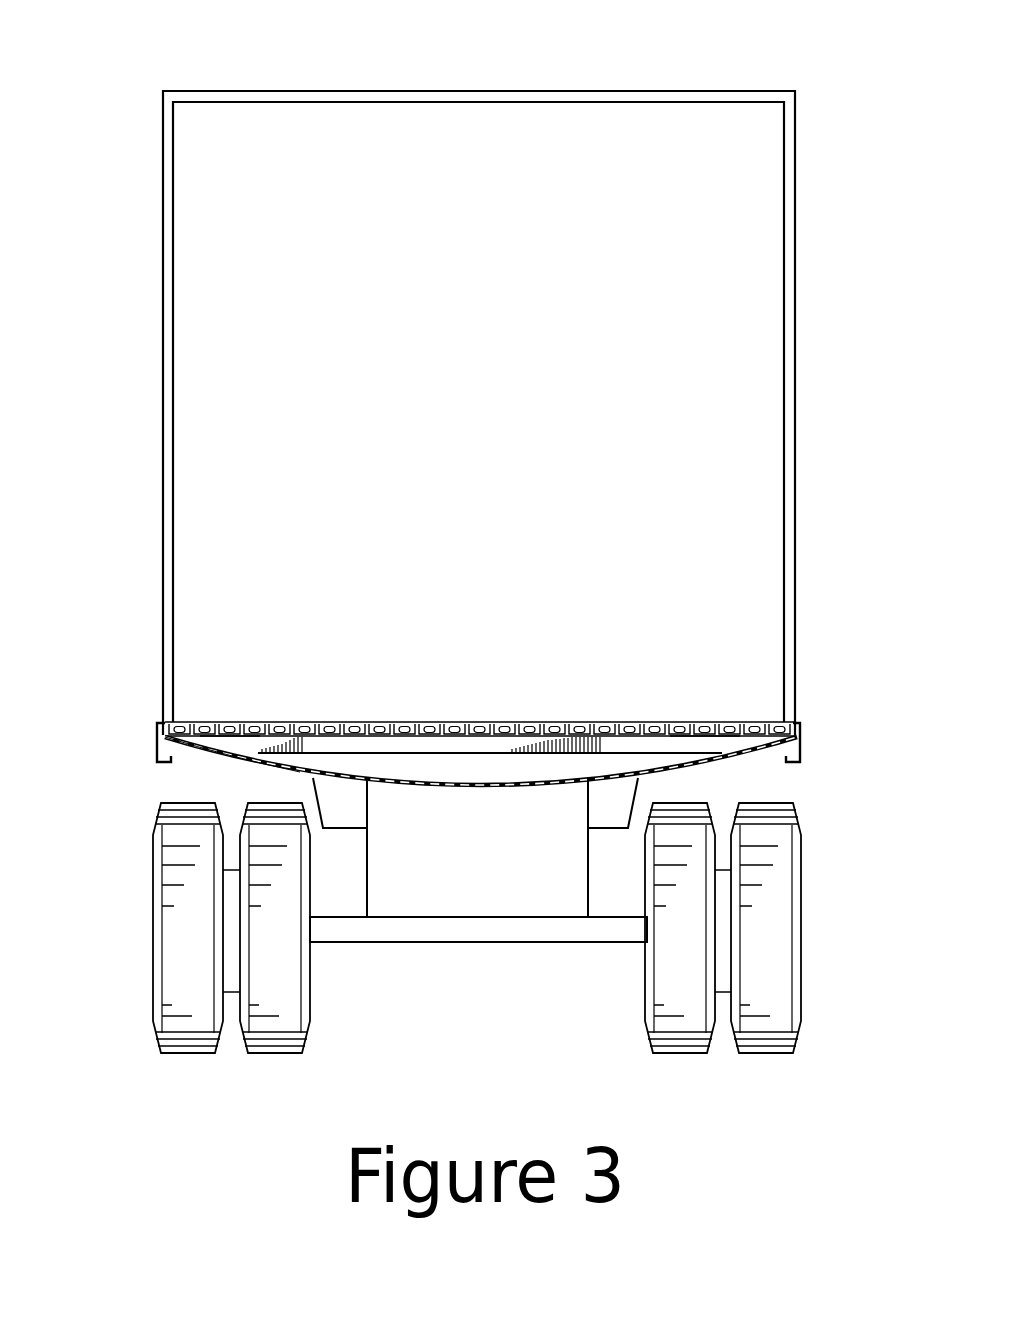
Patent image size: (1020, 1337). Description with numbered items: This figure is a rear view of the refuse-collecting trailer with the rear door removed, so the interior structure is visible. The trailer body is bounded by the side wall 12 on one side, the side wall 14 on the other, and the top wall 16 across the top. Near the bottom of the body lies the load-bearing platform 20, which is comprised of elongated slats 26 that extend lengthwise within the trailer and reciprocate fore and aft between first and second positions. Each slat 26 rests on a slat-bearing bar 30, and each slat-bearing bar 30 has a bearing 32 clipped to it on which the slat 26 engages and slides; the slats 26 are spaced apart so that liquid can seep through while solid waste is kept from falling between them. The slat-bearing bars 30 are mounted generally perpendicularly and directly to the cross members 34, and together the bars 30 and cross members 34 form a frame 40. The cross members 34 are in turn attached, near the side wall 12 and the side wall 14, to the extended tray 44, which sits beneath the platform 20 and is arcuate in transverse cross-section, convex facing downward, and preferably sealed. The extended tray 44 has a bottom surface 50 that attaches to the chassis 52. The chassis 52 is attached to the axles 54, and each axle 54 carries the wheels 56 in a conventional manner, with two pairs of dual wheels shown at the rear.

The side wall 12 is at (163, 405).
The side wall 14 is at (788, 298).
The top wall 16 is at (503, 98).
The load-bearing platform 20 is at (527, 722).
The elongated slats 26 is at (217, 720).
The slat-bearing bar 30 is at (736, 737).
The bearing 32 is at (713, 722).
The cross members 34 is at (210, 748).
The frame 40 is at (240, 748).
The extended tray 44 is at (485, 762).
The bottom surface 50 is at (508, 785).
The chassis 52 is at (533, 900).
The axles 54 is at (603, 930).
The wheels 56 is at (768, 912).